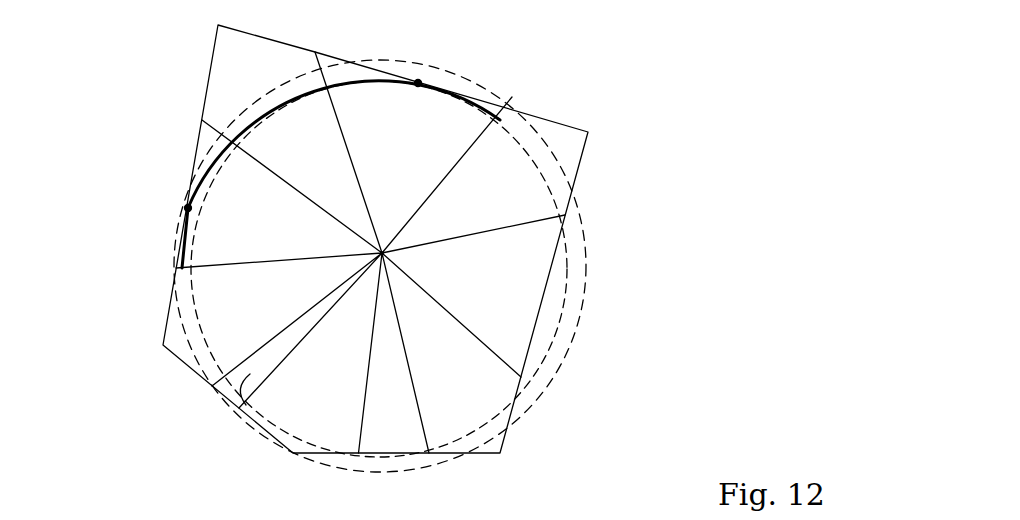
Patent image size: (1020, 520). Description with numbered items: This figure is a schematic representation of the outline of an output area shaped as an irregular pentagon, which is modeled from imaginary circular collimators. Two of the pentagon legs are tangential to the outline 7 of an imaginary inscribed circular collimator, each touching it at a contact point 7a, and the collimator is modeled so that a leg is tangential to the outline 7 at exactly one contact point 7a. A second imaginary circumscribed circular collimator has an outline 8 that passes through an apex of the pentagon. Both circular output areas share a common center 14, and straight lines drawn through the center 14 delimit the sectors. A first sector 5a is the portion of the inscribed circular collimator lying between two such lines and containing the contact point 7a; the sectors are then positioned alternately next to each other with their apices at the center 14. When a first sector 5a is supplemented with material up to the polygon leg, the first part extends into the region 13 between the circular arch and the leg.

The first sector 5a is at (435, 117).
The outline 7 is at (562, 282).
The contact point 7a is at (418, 83).
The outline 8 is at (532, 405).
The region 13 is at (178, 262).
The center 14 is at (382, 253).